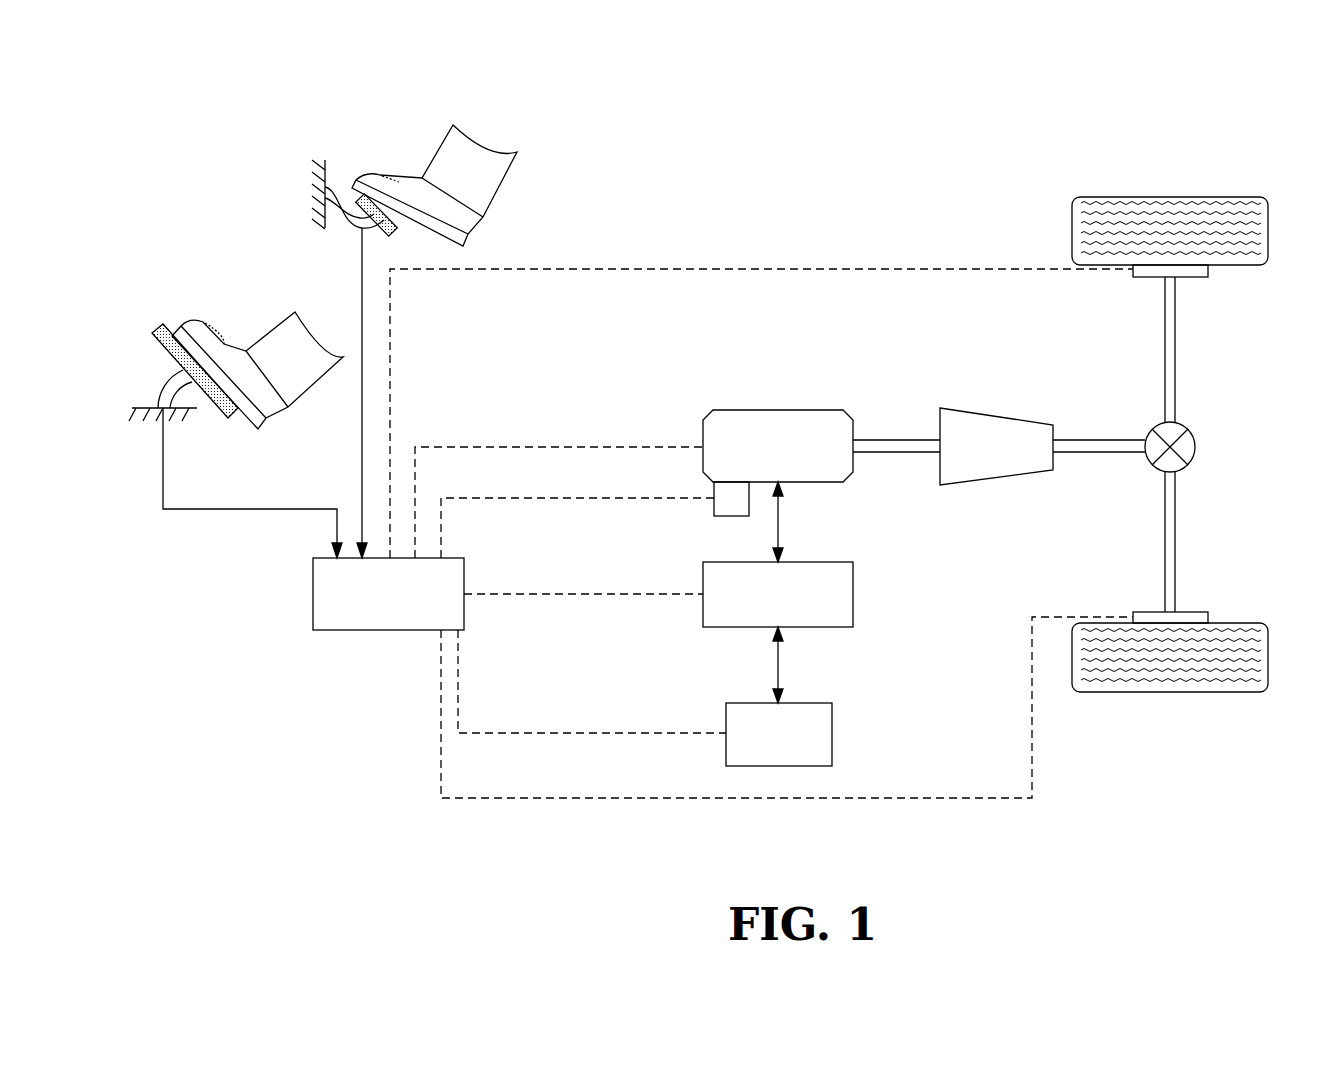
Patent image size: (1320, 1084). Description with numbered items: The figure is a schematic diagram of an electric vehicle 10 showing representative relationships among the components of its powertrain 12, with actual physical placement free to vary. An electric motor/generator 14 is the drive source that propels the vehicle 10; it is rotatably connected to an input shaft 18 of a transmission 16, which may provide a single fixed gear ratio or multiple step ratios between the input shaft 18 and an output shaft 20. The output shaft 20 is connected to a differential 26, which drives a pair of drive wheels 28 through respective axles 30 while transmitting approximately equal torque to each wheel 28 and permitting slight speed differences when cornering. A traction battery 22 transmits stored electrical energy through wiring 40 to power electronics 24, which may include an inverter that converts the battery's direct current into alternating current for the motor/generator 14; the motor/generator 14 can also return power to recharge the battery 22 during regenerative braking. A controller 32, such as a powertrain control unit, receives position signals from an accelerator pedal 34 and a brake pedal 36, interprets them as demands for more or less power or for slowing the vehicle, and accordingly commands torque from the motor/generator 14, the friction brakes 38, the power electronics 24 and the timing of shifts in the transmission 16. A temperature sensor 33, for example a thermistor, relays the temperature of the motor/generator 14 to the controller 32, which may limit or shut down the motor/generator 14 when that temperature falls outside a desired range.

The electric vehicle 10 is at (962, 104).
The powertrain 12 is at (833, 332).
The electric motor/generator (M/G) 14 is at (703, 432).
The transmission (gearbox) 16 is at (995, 412).
The input shaft 18 is at (900, 440).
The output shaft 20 is at (1088, 440).
The traction battery 22 is at (726, 720).
The power electronics 24 is at (820, 562).
The differential 26 is at (1195, 448).
The drive wheels 28 is at (1172, 197).
The axles 30 is at (1178, 345).
The controller 32 is at (313, 594).
The temperature sensor 33 is at (730, 516).
The accelerator pedal 34 is at (220, 303).
The brake pedal 36 is at (398, 132).
The friction brakes 38 is at (1208, 270).
The wiring 40 is at (780, 675).